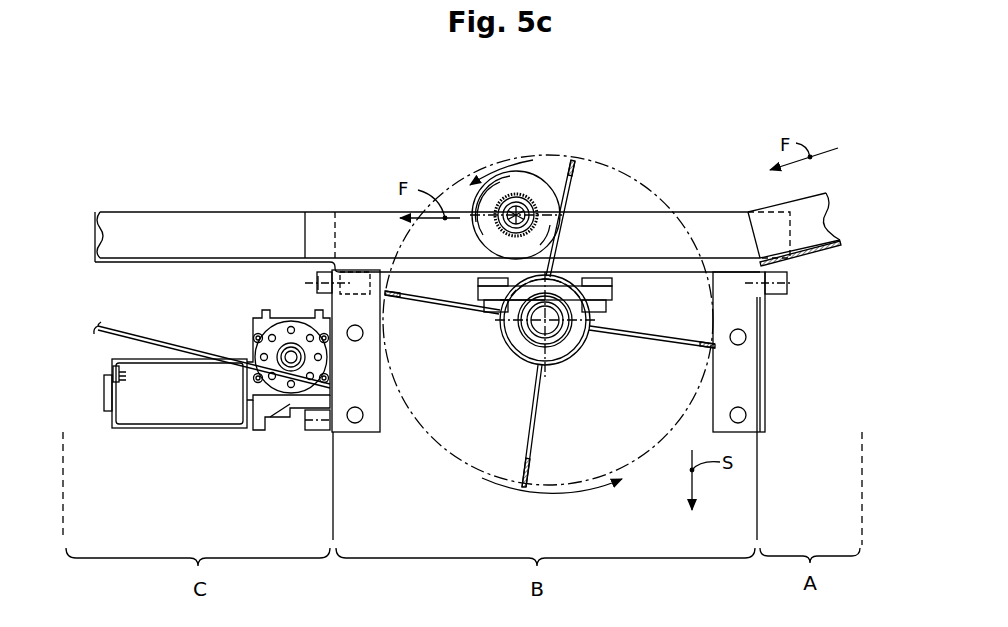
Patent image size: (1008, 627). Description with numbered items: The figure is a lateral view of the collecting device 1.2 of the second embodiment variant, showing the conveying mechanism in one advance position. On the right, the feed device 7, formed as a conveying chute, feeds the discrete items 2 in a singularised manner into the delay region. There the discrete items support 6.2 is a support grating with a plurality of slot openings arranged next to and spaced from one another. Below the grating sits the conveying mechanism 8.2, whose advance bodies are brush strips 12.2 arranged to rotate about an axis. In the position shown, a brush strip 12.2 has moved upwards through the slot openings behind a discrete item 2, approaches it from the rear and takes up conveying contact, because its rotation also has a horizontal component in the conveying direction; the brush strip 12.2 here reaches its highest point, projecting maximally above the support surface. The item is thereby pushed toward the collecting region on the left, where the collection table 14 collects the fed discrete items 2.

The collecting device 1.2 is at (323, 138).
The discrete item 2 is at (519, 212).
The discrete items support 6.2 is at (394, 254).
The feed device 7 is at (822, 257).
The conveying mechanism 8.2 is at (598, 350).
The brush strip 12.2 is at (560, 236).
The collection table 14 is at (228, 246).